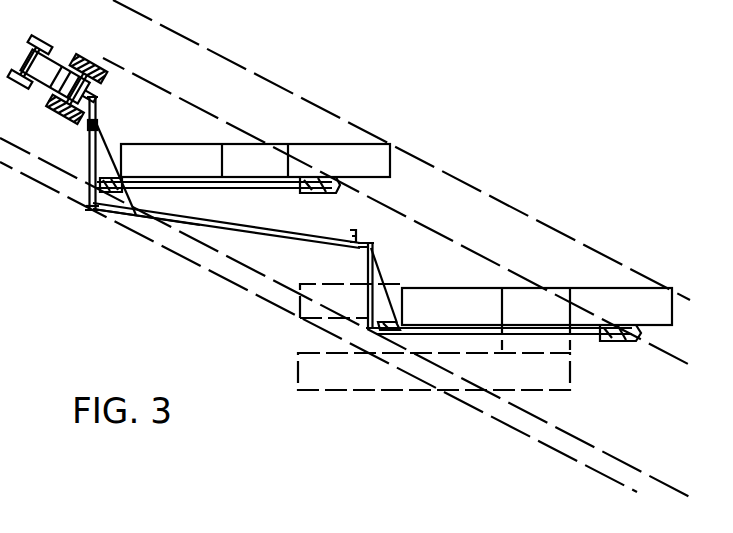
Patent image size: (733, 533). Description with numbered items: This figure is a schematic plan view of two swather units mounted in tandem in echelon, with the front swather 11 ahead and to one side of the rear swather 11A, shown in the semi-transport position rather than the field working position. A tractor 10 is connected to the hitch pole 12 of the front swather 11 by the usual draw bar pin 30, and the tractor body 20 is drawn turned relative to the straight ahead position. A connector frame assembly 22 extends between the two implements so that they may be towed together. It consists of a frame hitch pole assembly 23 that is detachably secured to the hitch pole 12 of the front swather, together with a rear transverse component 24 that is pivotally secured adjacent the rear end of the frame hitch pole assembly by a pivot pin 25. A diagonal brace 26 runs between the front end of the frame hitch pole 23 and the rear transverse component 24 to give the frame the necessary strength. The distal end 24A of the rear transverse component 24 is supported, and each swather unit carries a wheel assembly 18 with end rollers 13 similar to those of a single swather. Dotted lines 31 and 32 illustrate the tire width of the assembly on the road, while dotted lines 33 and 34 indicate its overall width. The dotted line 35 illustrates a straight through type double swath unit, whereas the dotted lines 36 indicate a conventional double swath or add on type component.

The tractor 10 is at (75, 66).
The front swather 11 is at (242, 143).
The rear swather 11A is at (526, 288).
The hitch pole 12 is at (98, 110).
The conveyor end roller 13 is at (258, 188).
The wheel assembly 18 is at (126, 175).
The tractor body 20 is at (69, 66).
The connector frame assembly 22 is at (201, 227).
The frame hitch pole assembly 23 is at (89, 124).
The rear transverse component 24 is at (243, 228).
The distal end 24A is at (358, 243).
The pivot pin 25 is at (92, 212).
The diagonal brace 26 is at (113, 160).
The draw bar pin 30 is at (118, 96).
The dotted line 31 is at (401, 215).
The dotted line 32 is at (502, 401).
The dotted line 33 is at (378, 140).
The dotted line 34 is at (440, 392).
The dotted line 35 is at (300, 298).
The dotted lines 36 is at (308, 389).